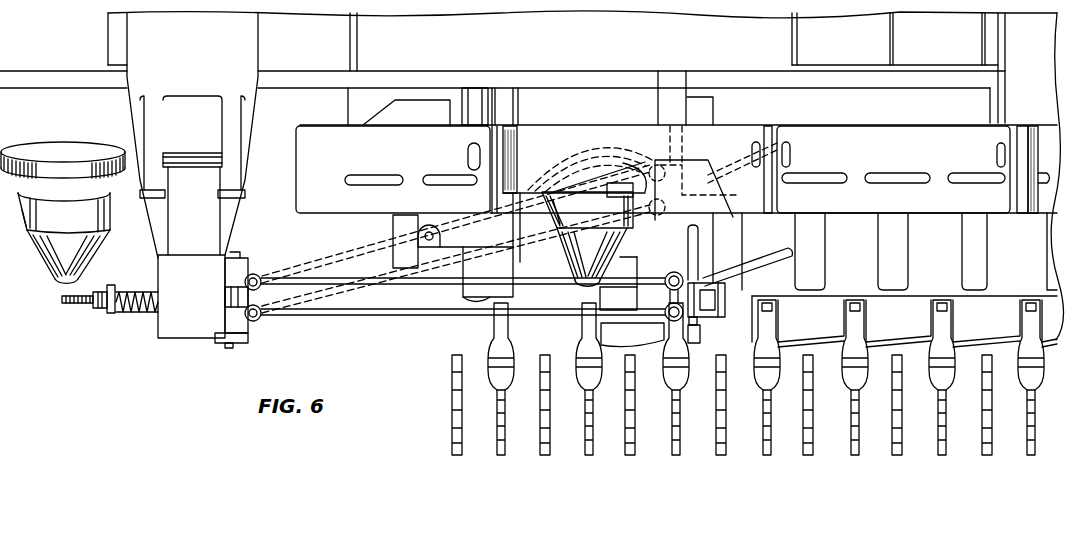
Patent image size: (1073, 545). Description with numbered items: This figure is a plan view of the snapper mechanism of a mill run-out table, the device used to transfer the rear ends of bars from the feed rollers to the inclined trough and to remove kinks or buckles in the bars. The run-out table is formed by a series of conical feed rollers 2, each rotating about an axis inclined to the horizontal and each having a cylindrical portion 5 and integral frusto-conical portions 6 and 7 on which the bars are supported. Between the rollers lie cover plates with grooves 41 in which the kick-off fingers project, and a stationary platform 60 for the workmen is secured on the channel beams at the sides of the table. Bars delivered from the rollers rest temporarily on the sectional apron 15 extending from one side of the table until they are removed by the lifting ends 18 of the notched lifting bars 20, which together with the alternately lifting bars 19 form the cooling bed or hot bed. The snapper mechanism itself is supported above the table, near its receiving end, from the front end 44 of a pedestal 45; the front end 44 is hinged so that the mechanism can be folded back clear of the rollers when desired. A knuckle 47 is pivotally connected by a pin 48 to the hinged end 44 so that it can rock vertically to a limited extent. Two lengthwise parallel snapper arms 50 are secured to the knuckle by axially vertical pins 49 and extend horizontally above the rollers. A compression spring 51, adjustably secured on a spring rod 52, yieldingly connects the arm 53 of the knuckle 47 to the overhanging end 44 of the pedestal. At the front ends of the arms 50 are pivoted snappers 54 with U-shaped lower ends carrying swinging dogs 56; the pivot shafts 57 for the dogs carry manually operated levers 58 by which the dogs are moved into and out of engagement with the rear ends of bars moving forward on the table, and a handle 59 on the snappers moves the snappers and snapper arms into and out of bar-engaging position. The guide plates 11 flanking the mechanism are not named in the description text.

The conical feed roller 2 is at (325, 212).
The cylindrical portion 5 is at (326, 169).
The frusto-conical portion 6 is at (27, 218).
The frusto-conical portion 7 is at (44, 261).
The guide plate 11 is at (995, 209).
The sectional apron 15 is at (829, 321).
The lifting end 18 is at (581, 328).
The lifting bar 19 is at (460, 376).
The notched lifting bar 20 is at (506, 416).
The groove 41 is at (926, 251).
The front end of pedestal 44 is at (191, 296).
The pedestal 45 is at (192, 135).
The knuckle 47 is at (238, 274).
The pin 48 is at (229, 344).
The vertical pin 49 is at (262, 277).
The snapper arm 50 is at (390, 311).
The compression spring 51 is at (150, 313).
The spring rod 52 is at (88, 306).
The arm of knuckle 53 is at (258, 297).
The snapper 54 is at (667, 295).
The swinging dog 56 is at (720, 298).
The pivot shaft 57 is at (716, 320).
The lever 58 is at (778, 254).
The handle 59 is at (698, 231).
The stationary platform 60 is at (532, 175).